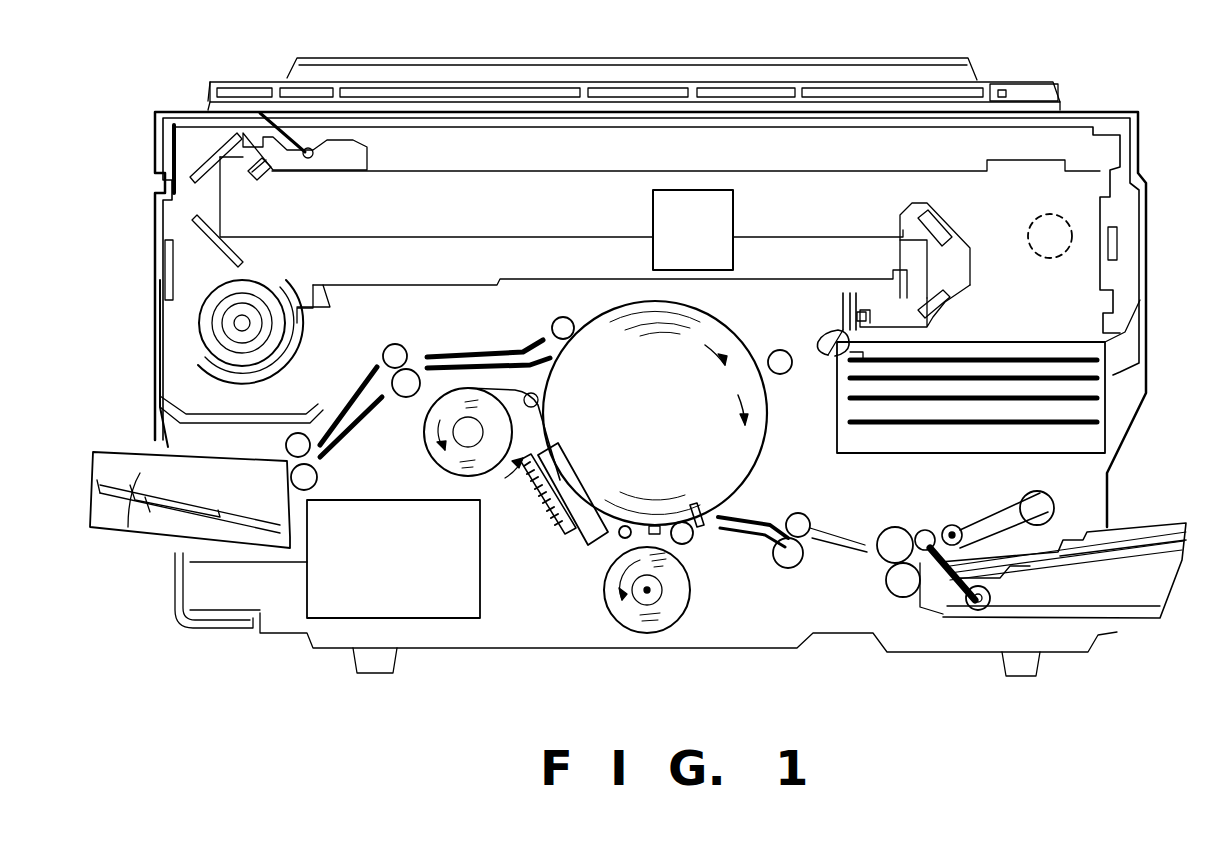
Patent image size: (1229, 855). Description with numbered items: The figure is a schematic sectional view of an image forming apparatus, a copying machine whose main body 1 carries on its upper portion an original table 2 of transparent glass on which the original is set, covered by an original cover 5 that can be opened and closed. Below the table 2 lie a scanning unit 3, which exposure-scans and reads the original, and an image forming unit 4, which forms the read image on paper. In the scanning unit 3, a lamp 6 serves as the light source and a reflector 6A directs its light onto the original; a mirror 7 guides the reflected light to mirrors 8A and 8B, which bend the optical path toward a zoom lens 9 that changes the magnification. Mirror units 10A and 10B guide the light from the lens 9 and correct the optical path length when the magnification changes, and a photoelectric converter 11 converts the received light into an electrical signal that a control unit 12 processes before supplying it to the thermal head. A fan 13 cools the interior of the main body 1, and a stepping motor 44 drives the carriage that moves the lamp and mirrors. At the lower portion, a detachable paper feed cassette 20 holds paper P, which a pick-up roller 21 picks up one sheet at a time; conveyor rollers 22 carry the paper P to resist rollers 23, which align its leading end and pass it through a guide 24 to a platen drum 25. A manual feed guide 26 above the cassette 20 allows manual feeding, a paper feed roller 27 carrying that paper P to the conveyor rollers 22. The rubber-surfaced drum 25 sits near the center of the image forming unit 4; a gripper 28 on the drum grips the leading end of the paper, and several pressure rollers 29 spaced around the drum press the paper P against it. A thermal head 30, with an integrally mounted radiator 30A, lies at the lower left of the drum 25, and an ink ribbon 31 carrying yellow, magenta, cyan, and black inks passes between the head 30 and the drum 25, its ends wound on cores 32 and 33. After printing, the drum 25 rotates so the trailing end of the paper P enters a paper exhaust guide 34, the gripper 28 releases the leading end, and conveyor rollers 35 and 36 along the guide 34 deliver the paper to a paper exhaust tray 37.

The copying machine main body 1 is at (1145, 112).
The original table 2 is at (462, 110).
The scanning unit 3 is at (193, 142).
The image forming unit 4 is at (581, 628).
The original cover 5 is at (890, 78).
The lamp 6 is at (310, 148).
The reflector 6A is at (330, 152).
The mirror 7 is at (268, 177).
The mirror 8A is at (196, 172).
The mirror 8B is at (202, 228).
The zoom lens 9 is at (720, 228).
The mirror unit 10A is at (942, 226).
The mirror unit 10B is at (950, 305).
The photoelectric converter 11 is at (831, 343).
The control unit 12 is at (1117, 393).
The fan 13 is at (232, 320).
The paper feed cassette 20 is at (1158, 598).
The pick-up roller 21 is at (970, 607).
The conveyor rollers 22 is at (885, 565).
The resist rollers 23 is at (800, 558).
The guide 24 is at (758, 546).
The platen drum 25 is at (738, 468).
The manual feed guide 26 is at (1130, 537).
The paper feed roller 27 is at (1040, 502).
The gripper 28 is at (697, 500).
The pressure rollers 29 is at (552, 320).
The thermal head 30 is at (592, 532).
The radiator 30A is at (543, 488).
The ink ribbon 31 is at (685, 583).
The core 32 is at (448, 462).
The core 33 is at (660, 598).
The paper exhaust guide 34 is at (433, 353).
The conveyor roller 35 is at (383, 354).
The conveyor roller 36 is at (287, 446).
The paper exhaust tray 37 is at (130, 535).
The stepping motor 44 is at (1050, 258).
The paper P is at (1168, 590).